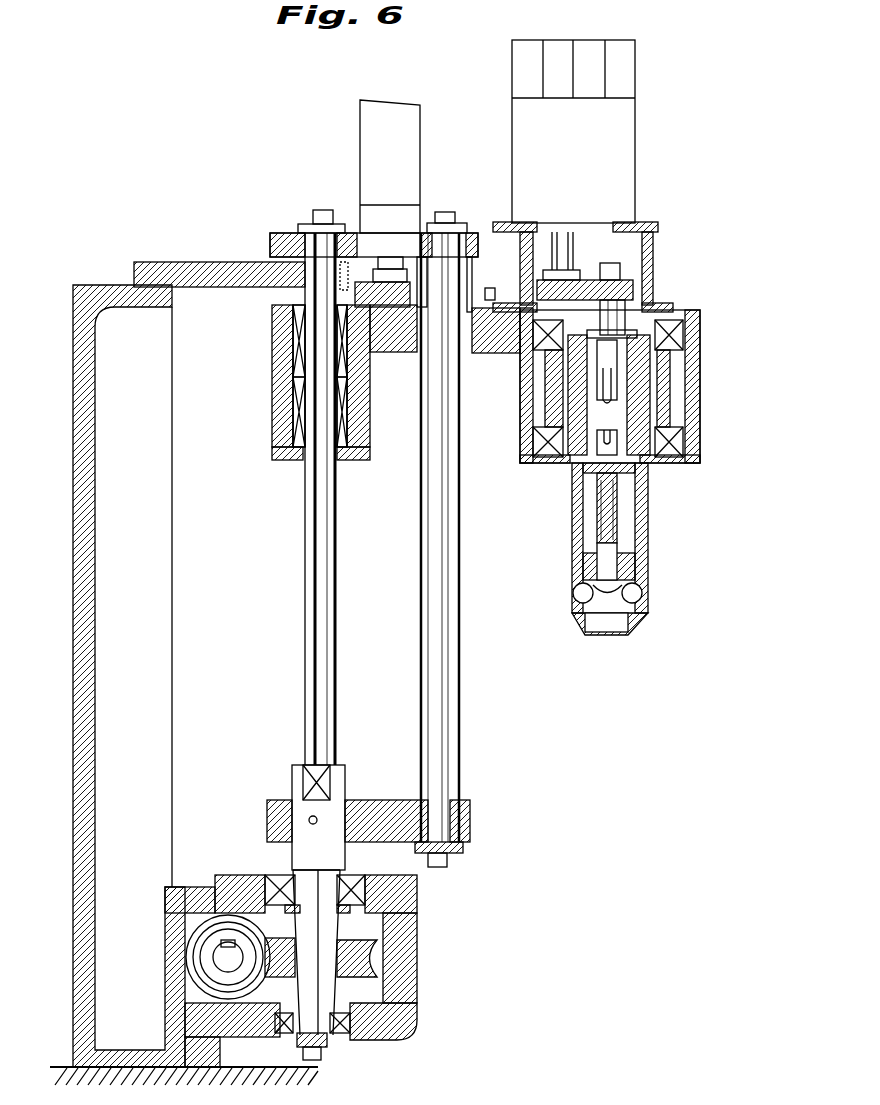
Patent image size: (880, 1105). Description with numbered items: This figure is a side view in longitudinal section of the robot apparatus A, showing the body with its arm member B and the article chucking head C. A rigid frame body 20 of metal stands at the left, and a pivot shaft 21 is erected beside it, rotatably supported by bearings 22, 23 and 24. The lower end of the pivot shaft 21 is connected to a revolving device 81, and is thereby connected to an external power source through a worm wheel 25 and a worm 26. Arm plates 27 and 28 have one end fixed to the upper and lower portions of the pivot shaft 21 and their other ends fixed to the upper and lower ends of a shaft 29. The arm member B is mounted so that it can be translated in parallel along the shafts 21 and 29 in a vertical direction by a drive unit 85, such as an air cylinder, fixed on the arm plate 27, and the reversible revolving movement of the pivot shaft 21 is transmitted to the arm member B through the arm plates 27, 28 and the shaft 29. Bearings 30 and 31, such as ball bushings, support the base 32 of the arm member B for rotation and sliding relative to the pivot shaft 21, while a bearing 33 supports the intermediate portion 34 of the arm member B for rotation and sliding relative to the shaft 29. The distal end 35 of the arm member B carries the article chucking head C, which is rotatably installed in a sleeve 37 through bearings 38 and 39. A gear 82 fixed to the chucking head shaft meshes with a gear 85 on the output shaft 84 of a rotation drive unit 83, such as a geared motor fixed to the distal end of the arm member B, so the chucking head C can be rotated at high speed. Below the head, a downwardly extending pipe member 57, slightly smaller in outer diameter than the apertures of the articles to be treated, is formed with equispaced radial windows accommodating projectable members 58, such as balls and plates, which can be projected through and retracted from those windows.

The robot apparatus A is at (173, 240).
The arm member B is at (488, 290).
The article chucking head C is at (648, 507).
The rigid frame body 20 is at (150, 508).
The pivot shaft 21 is at (315, 537).
The bearing 22 is at (340, 1030).
The bearing 23 is at (277, 883).
The bearing 24 is at (305, 262).
The worm wheel 25 is at (373, 970).
The worm 26 is at (193, 953).
The arm plate 27 is at (273, 232).
The arm plate 28 is at (277, 815).
The shaft 29 is at (440, 575).
The bearing 30 is at (297, 363).
The bearing 31 is at (293, 392).
The base of the arm member 32 is at (283, 330).
The bearing 33 is at (467, 367).
The intermediate portion of the arm member 34 is at (398, 330).
The distal end of the arm member 35 is at (693, 307).
The sleeve 37 is at (693, 387).
The bearing 38 is at (677, 337).
The bearing 39 is at (677, 443).
The pipe member 57 is at (570, 537).
The projectable members 58 is at (642, 593).
The revolving device 81 is at (417, 940).
The gear 82 is at (627, 290).
The rotation drive unit 83 is at (623, 117).
The output shaft 84 is at (560, 238).
The drive unit 85 is at (360, 122).